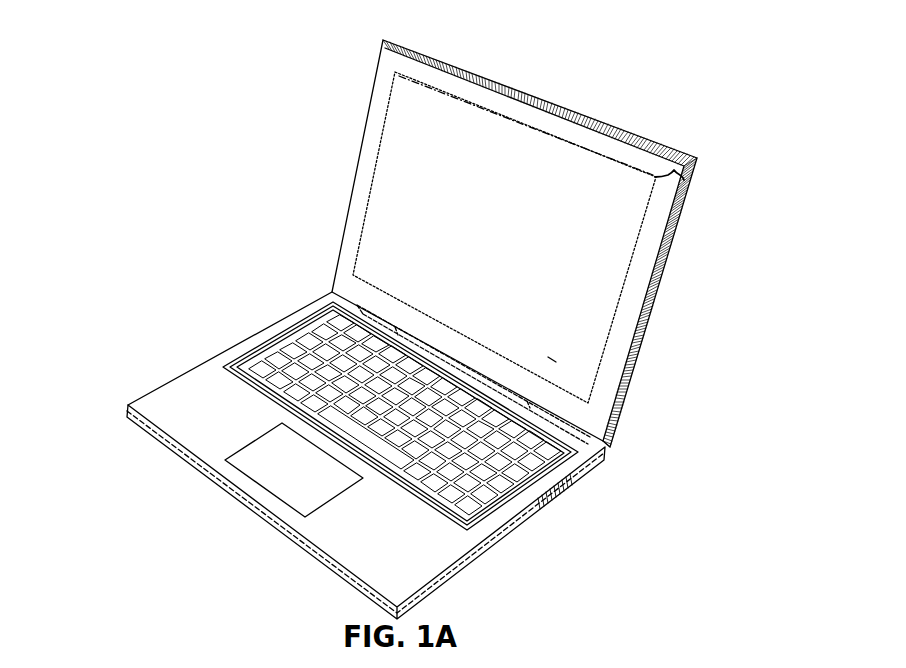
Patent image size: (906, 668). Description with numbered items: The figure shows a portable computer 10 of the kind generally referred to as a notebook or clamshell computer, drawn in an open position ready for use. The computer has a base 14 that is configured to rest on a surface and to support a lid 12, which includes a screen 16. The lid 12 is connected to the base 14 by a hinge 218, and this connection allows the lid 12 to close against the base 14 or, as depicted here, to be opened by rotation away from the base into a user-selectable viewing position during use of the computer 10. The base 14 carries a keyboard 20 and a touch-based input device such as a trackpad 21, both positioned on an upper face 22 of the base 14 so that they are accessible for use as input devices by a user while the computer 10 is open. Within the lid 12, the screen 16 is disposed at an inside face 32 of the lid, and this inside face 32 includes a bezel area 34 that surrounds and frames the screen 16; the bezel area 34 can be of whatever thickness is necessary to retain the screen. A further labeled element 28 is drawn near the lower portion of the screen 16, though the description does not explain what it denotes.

The portable computer 10 is at (343, 43).
The lid 12 is at (663, 285).
The base 14 is at (513, 535).
The screen 16 is at (417, 178).
The keyboard 20 is at (305, 345).
The touchpad 21 is at (270, 455).
The upper face 22 is at (198, 422).
The display 28 is at (552, 360).
The inside face 32 is at (492, 102).
The bezel area 34 is at (674, 170).
The hinge 218 is at (357, 305).